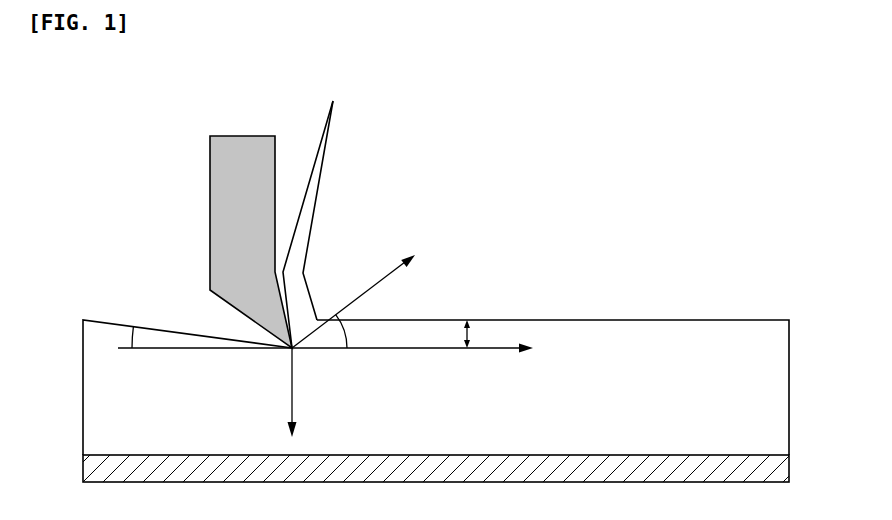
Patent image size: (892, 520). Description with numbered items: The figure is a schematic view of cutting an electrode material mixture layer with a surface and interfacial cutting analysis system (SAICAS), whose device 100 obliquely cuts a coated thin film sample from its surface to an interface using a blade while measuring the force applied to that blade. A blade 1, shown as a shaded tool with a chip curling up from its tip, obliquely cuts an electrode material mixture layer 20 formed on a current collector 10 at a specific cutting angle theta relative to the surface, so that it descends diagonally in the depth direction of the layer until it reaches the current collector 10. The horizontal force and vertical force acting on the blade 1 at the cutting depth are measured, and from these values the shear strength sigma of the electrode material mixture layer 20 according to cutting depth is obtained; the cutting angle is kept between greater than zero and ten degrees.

The blade 1 is at (218, 183).
The current collector 10 is at (777, 471).
The electrode material mixture layer 20 is at (776, 391).
The device 100 is at (590, 142).